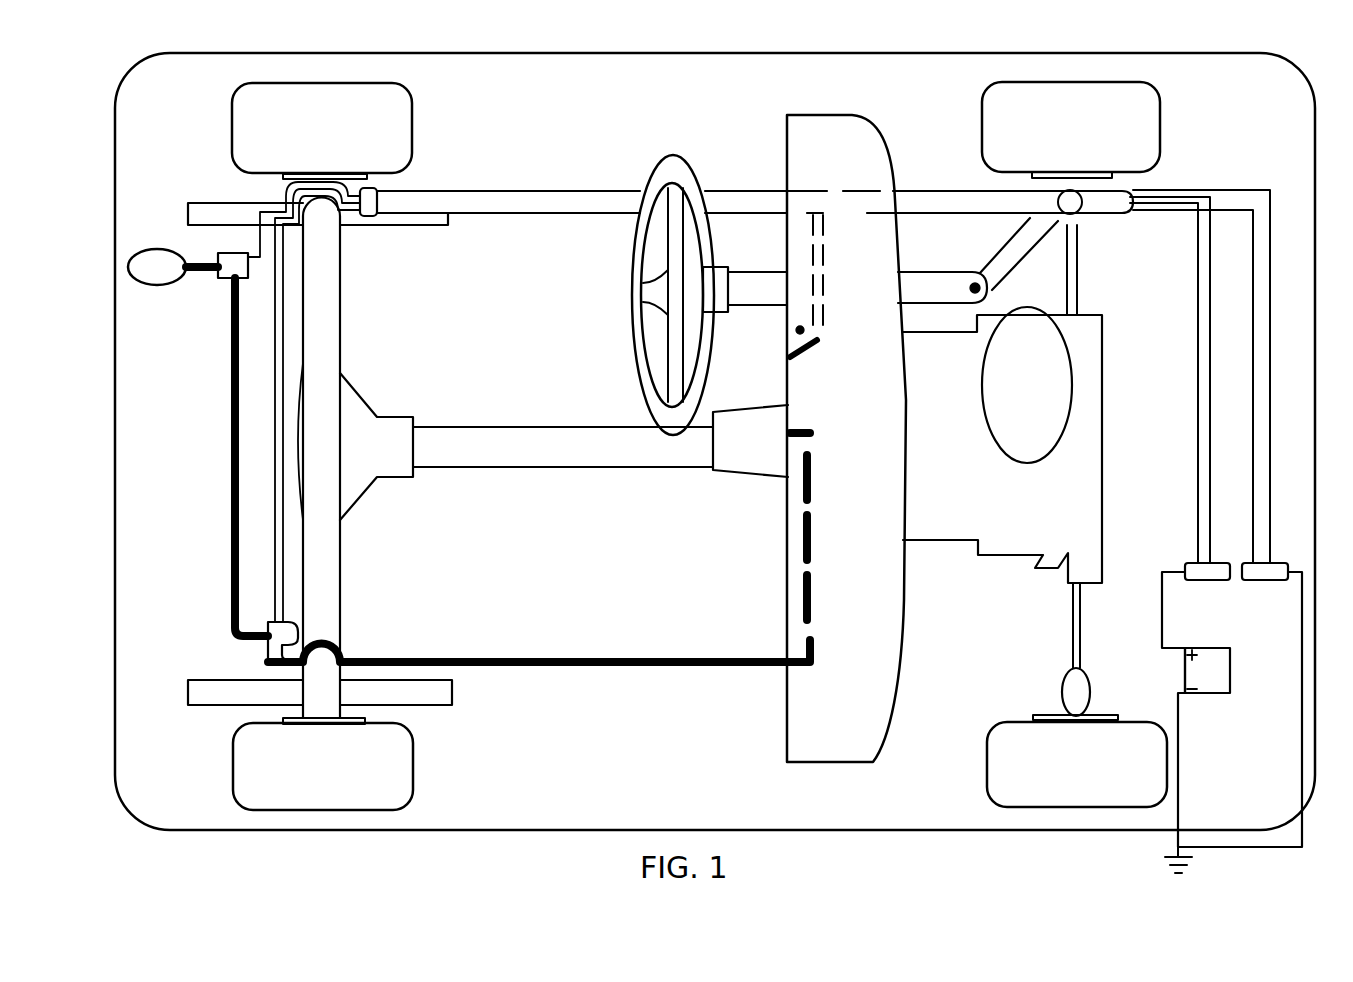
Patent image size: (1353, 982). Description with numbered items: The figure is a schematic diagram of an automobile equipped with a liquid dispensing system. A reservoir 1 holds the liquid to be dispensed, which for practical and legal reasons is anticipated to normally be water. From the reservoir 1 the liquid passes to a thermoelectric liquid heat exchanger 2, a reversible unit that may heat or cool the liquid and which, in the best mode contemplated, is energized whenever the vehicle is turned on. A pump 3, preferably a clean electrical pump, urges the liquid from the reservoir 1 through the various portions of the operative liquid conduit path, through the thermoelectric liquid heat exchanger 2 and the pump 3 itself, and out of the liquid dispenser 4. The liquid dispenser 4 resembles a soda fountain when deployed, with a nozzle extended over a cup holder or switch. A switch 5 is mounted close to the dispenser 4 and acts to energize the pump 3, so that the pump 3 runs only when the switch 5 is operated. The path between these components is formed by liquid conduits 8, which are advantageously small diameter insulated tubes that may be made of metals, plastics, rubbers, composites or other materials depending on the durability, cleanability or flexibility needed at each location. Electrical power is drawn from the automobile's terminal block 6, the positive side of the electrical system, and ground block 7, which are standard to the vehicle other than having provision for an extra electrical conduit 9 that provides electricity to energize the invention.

The reservoir 1 is at (120, 272).
The thermoelectric liquid heat exchanger 2 is at (224, 280).
The pump 3 is at (260, 649).
The liquid dispenser 4 is at (778, 433).
The switch 5 is at (776, 340).
The terminal block 6 is at (1188, 555).
The ground block 7 is at (1287, 555).
The liquid conduits 8 is at (694, 669).
The electrical conduit 9 is at (560, 218).